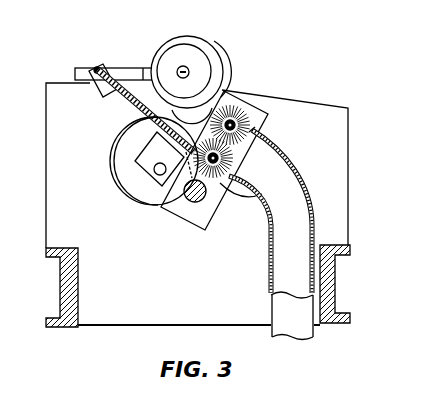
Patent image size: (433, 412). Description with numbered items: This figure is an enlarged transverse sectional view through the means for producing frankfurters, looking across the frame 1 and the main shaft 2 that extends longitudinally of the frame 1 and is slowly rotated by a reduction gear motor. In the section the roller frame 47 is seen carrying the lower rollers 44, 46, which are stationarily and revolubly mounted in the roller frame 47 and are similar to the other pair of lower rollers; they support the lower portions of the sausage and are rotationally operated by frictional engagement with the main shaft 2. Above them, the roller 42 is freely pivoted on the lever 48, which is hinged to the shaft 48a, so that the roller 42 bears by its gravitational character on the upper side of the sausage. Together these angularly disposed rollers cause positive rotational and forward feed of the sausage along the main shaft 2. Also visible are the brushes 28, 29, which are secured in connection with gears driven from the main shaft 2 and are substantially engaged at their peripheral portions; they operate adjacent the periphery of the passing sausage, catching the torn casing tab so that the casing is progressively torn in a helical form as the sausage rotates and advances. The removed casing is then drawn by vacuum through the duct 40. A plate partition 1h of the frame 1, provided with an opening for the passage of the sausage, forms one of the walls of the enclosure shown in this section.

The frame 1 is at (335, 277).
The plate partition 1h is at (333, 202).
The main shaft 2 is at (182, 221).
The brush 28 is at (246, 108).
The brush 29 is at (221, 183).
The duct 40 is at (302, 178).
The roller 42 is at (215, 56).
The roller 44 is at (268, 142).
The roller 46 is at (148, 193).
The roller frame 47 is at (128, 107).
The lever 48 is at (133, 66).
The shaft 48a is at (96, 67).